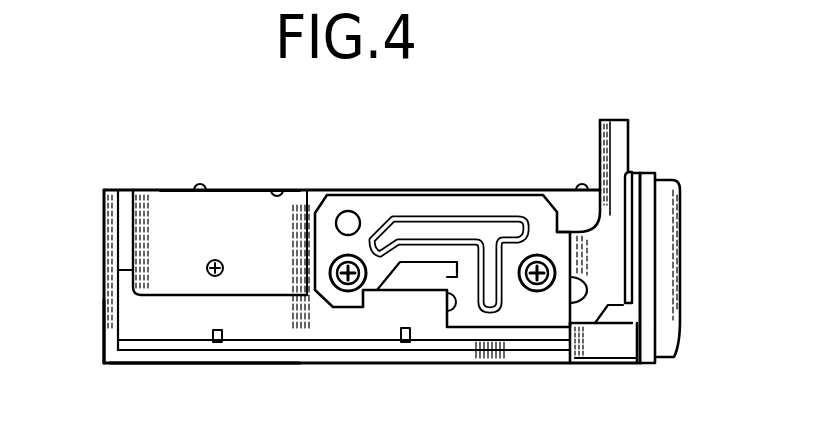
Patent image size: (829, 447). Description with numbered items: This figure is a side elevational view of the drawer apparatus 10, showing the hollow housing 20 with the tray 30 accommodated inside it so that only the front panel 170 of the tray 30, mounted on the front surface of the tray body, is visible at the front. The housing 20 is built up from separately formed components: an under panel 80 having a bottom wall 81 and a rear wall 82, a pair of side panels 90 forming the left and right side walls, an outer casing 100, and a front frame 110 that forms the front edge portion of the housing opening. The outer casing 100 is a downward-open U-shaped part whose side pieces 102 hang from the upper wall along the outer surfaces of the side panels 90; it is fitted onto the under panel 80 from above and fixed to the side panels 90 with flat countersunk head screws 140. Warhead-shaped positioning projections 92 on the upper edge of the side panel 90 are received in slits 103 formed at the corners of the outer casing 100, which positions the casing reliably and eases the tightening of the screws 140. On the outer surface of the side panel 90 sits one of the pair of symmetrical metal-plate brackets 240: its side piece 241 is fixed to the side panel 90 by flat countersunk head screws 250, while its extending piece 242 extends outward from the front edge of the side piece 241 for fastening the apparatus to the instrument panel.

The drawer apparatus 10 is at (160, 170).
The hollow housing 20 is at (178, 192).
The tray 30 is at (665, 178).
The under panel 80 is at (176, 373).
The bottom wall 81 is at (205, 386).
The rear wall 82 is at (105, 347).
The side panels 90 is at (257, 325).
The positioning projections 92 is at (287, 197).
The outer casing 100 is at (155, 200).
The side pieces 102 is at (235, 200).
The slits 103 is at (267, 190).
The front frame 110 is at (603, 345).
The flat countersunk head screws 140 is at (207, 265).
The front panel 170 is at (675, 247).
The brackets 240 is at (471, 184).
The side piece 241 is at (475, 195).
The extending piece 242 is at (605, 135).
The flat countersunk head screws 250 is at (357, 292).